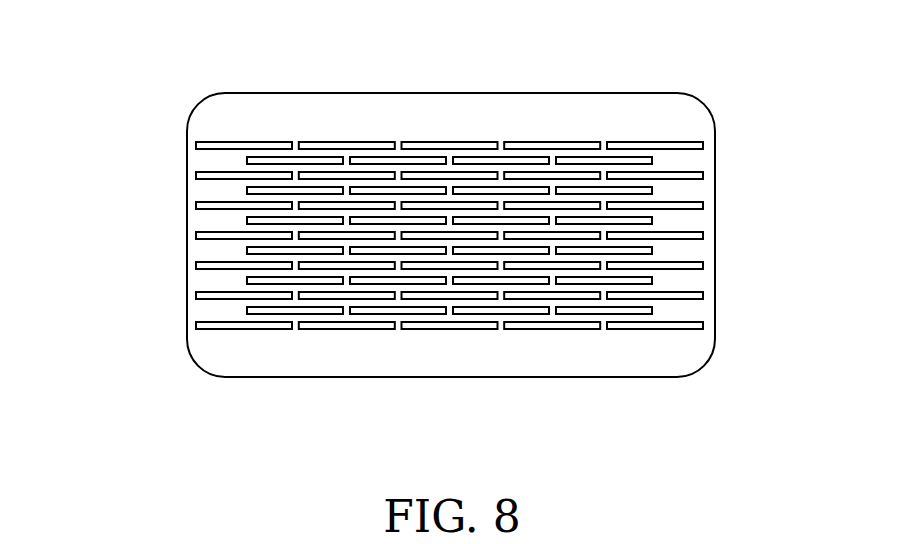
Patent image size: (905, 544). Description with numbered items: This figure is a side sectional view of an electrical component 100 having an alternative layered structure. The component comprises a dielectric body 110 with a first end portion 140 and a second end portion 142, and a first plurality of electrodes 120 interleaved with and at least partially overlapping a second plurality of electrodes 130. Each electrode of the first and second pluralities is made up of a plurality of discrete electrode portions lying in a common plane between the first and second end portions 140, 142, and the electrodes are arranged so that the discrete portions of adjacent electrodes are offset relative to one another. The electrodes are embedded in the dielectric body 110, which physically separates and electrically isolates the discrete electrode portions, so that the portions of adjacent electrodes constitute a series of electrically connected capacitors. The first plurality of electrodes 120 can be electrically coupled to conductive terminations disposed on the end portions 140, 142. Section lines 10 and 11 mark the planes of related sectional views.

The electrical component 100 is at (136, 46).
The dielectric body 110 is at (452, 93).
The first plurality of electrodes 120 is at (201, 146).
The second plurality of electrodes 130 is at (651, 160).
The first end portion 140 is at (187, 323).
The second end portion 142 is at (715, 323).
The section line 10- 10 is at (177, 142).
The section line 11- 11 is at (329, 72).